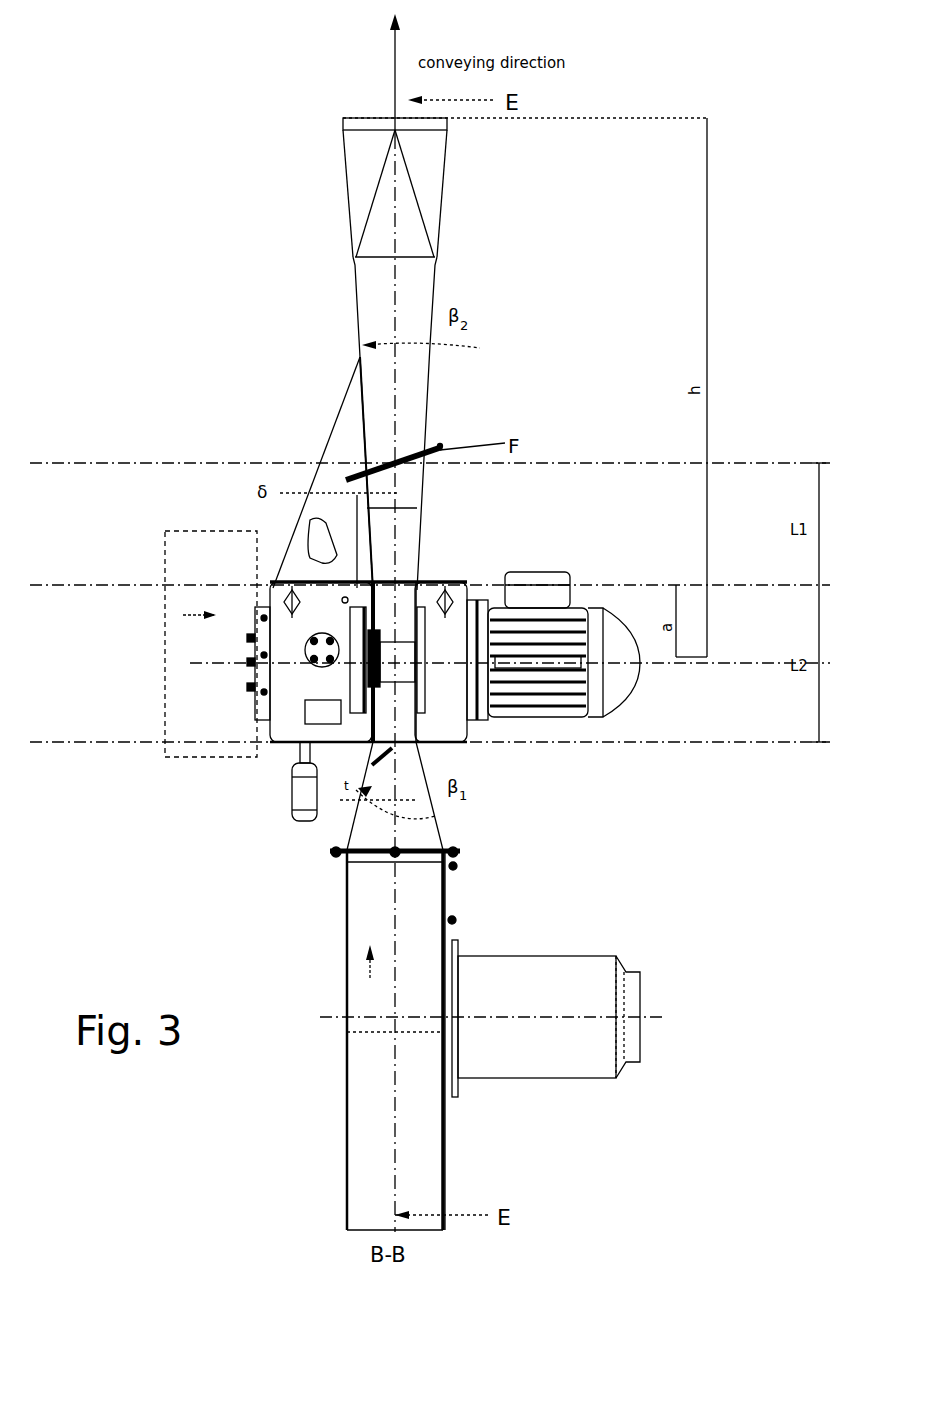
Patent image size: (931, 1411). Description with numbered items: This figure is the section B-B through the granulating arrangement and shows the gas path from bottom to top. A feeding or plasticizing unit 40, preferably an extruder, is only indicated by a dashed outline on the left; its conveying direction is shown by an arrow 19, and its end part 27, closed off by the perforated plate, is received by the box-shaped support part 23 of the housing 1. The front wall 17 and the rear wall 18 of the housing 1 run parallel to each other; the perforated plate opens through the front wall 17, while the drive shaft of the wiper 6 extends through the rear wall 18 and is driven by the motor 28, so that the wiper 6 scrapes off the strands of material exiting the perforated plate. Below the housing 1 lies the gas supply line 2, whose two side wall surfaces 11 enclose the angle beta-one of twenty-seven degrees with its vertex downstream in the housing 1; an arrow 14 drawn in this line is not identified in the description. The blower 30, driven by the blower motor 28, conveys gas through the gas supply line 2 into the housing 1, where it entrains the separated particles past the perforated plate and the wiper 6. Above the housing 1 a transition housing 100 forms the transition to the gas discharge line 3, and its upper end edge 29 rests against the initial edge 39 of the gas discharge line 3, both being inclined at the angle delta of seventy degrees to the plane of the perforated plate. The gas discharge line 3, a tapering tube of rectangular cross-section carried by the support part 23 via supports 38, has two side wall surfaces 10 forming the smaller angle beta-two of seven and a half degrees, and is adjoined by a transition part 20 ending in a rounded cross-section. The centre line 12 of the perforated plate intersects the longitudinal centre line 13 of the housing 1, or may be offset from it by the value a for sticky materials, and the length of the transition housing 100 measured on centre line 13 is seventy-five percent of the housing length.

The housing 1 is at (474, 733).
The gas supply line 2 is at (440, 746).
The gas discharge line 3 is at (347, 297).
The wiper 6 is at (383, 633).
The side wall surfaces 10 is at (360, 402).
The side wall surfaces 11 is at (352, 828).
The centre line 12 is at (250, 668).
The longitudinal centre line 13 is at (395, 1125).
The flow direction 14 is at (362, 965).
The front wall 17 is at (405, 606).
The rear wall 18 is at (333, 580).
The arrow 19 is at (190, 607).
The transition part 20 is at (462, 172).
The support part 23 is at (290, 750).
The end part 27 is at (258, 720).
The motor 28 is at (578, 610).
The end edge 29 is at (588, 990).
The blower 30 is at (372, 1104).
The supports 38 is at (330, 460).
The initial edge 39 is at (432, 443).
The feeding or plasticizing unit 40 is at (186, 655).
The transition housing 100 is at (421, 490).